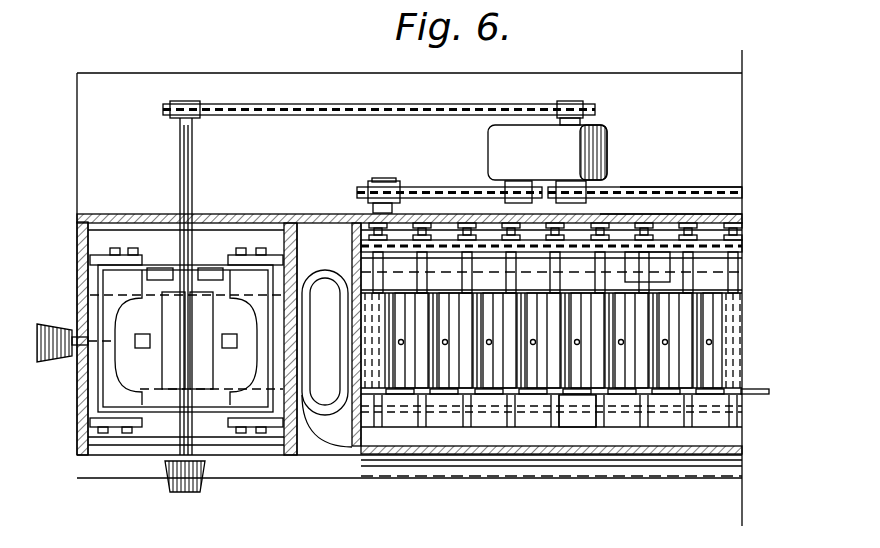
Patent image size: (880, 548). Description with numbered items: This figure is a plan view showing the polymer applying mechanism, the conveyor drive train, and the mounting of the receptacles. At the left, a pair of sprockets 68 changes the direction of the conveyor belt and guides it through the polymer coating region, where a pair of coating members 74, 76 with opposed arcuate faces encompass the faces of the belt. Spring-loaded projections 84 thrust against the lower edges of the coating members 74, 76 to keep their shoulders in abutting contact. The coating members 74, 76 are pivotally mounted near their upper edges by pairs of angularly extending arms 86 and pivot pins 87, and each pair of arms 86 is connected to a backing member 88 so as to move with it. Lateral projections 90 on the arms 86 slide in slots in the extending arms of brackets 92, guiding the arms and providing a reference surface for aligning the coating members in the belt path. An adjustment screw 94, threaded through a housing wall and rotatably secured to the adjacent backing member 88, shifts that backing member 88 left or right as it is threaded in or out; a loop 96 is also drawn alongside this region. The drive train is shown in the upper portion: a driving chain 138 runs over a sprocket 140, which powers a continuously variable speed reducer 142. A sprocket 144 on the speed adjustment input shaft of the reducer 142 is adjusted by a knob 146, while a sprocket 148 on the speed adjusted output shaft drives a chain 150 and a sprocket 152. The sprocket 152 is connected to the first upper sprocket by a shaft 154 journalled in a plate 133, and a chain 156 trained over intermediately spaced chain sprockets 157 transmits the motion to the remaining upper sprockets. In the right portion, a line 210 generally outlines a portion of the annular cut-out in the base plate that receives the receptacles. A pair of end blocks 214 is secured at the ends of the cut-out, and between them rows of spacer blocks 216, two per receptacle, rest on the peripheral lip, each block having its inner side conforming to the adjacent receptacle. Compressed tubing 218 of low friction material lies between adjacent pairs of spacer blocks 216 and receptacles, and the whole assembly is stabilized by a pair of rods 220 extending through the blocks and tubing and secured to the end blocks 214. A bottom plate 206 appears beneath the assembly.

The sprockets 68 is at (147, 272).
The coating member 74 is at (140, 371).
The coating member 76 is at (258, 266).
The spring-loaded projections 84 is at (245, 300).
The angularly extending arms 86 is at (210, 267).
The pivot pins 87 is at (163, 267).
The backing member 88 is at (375, 275).
The lateral projections 90 is at (260, 434).
The brackets 92 is at (92, 431).
The adjustment screw 94 is at (55, 324).
The conduit loop 96 is at (322, 440).
The plate 133 is at (672, 214).
The driving chain 138 is at (713, 187).
The sprocket 140 is at (584, 200).
The continuously variable speed reducer 142 is at (595, 150).
The sprocket 144 is at (597, 106).
The knob 146 is at (178, 492).
The sprocket 148 is at (510, 201).
The chain 150 is at (431, 186).
The sprocket 152 is at (383, 181).
The shaft 154 is at (372, 283).
The chain 156 is at (392, 206).
The chain sprockets 157 is at (718, 213).
The base plate 206 is at (80, 478).
The line outlining annular cut-out 210 is at (730, 428).
The end blocks 214 is at (367, 420).
The spacer blocks 216 is at (663, 278).
The compressed tubing 218 is at (600, 413).
The rods 220 is at (742, 408).